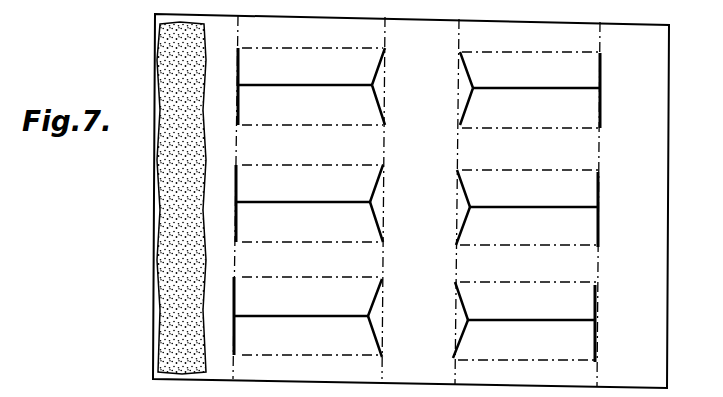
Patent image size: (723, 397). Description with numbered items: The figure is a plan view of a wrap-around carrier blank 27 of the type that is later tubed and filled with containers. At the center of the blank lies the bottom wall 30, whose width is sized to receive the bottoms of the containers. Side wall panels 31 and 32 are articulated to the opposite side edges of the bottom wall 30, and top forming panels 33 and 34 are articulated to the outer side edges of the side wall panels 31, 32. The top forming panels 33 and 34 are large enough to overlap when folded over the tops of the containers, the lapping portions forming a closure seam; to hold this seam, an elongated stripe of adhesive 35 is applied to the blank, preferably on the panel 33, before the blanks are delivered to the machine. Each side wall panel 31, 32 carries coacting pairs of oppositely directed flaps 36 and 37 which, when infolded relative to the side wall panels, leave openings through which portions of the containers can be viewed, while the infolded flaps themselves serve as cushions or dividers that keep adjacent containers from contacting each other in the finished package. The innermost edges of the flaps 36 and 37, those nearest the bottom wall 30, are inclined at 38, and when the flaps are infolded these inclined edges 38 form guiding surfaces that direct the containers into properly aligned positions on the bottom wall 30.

The frame 27 is at (565, 25).
The bottom wall 30 is at (420, 200).
The side wall panel 31 is at (312, 145).
The side wall panel 32 is at (530, 149).
The top forming panel 33 is at (225, 197).
The top forming panel 34 is at (620, 204).
The stripe of adhesive 35 is at (190, 203).
The flap 36 is at (417, 189).
The flap 37 is at (421, 227).
The inclined edge 38 is at (469, 101).